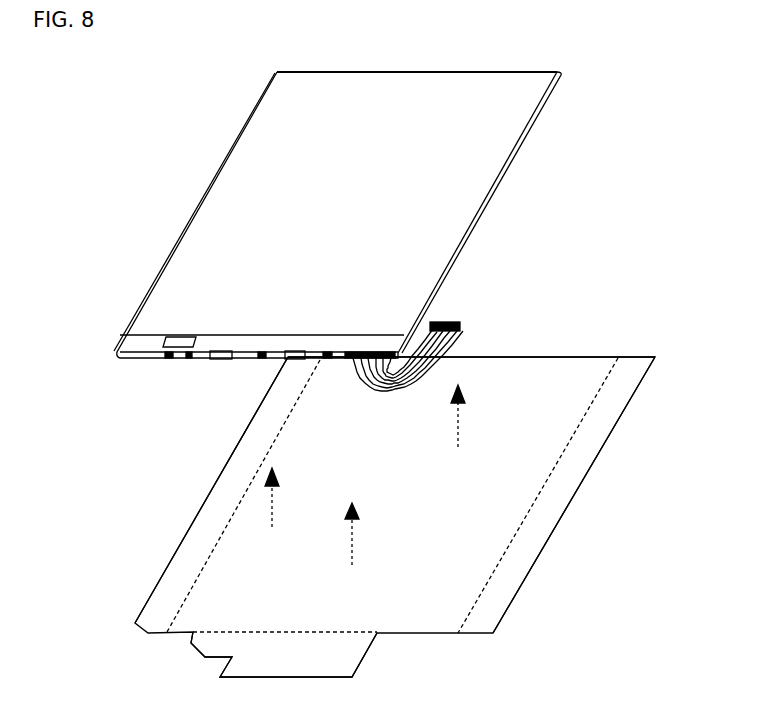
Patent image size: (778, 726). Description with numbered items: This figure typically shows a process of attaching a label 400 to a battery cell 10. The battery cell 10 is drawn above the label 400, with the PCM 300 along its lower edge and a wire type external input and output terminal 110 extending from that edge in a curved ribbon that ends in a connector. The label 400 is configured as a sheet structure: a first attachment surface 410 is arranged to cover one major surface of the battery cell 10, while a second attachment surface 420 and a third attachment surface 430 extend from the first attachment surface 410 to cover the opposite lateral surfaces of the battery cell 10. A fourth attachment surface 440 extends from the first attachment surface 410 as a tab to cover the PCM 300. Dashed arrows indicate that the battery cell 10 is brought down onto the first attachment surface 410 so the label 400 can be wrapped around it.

The battery cell 10 is at (218, 243).
The wire type external input and output terminal 110 is at (461, 328).
The PCM 300 is at (122, 357).
The label 400 is at (127, 615).
The first attachment surface 410 is at (562, 368).
The second attachment surface 420 is at (565, 495).
The third attachment surface 430 is at (200, 538).
The fourth attachment surface 440 is at (230, 640).